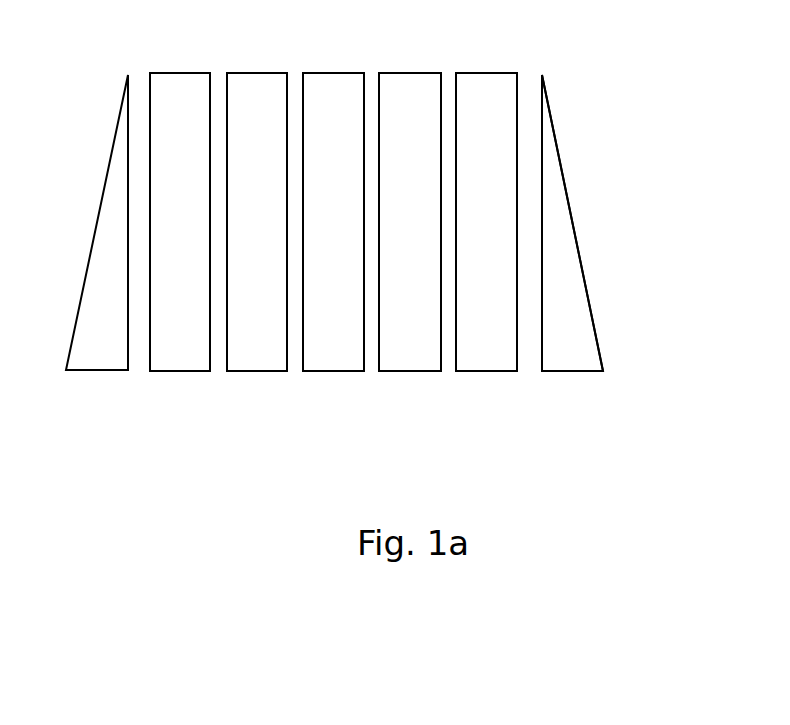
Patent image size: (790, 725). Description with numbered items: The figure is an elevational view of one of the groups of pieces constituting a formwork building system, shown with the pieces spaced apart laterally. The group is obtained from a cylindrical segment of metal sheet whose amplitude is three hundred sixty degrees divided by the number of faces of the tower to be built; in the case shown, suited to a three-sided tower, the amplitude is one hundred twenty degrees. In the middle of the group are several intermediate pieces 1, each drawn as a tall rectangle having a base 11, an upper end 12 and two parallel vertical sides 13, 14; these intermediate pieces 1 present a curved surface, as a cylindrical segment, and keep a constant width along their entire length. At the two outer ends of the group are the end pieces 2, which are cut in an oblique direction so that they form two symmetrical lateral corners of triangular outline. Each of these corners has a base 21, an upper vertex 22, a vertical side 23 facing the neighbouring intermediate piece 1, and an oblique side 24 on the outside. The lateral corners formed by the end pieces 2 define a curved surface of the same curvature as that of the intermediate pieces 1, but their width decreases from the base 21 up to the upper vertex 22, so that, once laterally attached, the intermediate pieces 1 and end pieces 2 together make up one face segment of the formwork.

The intermediate piece 1 is at (239, 360).
The end piece 2 is at (97, 357).
The base 11 is at (157, 72).
The upper end 12 is at (157, 371).
The vertical side 13 is at (150, 118).
The vertical side 14 is at (210, 118).
The base 21 is at (579, 371).
The upper vertex 22 is at (542, 75).
The vertical side 23 is at (542, 250).
The oblique side 24 is at (565, 168).